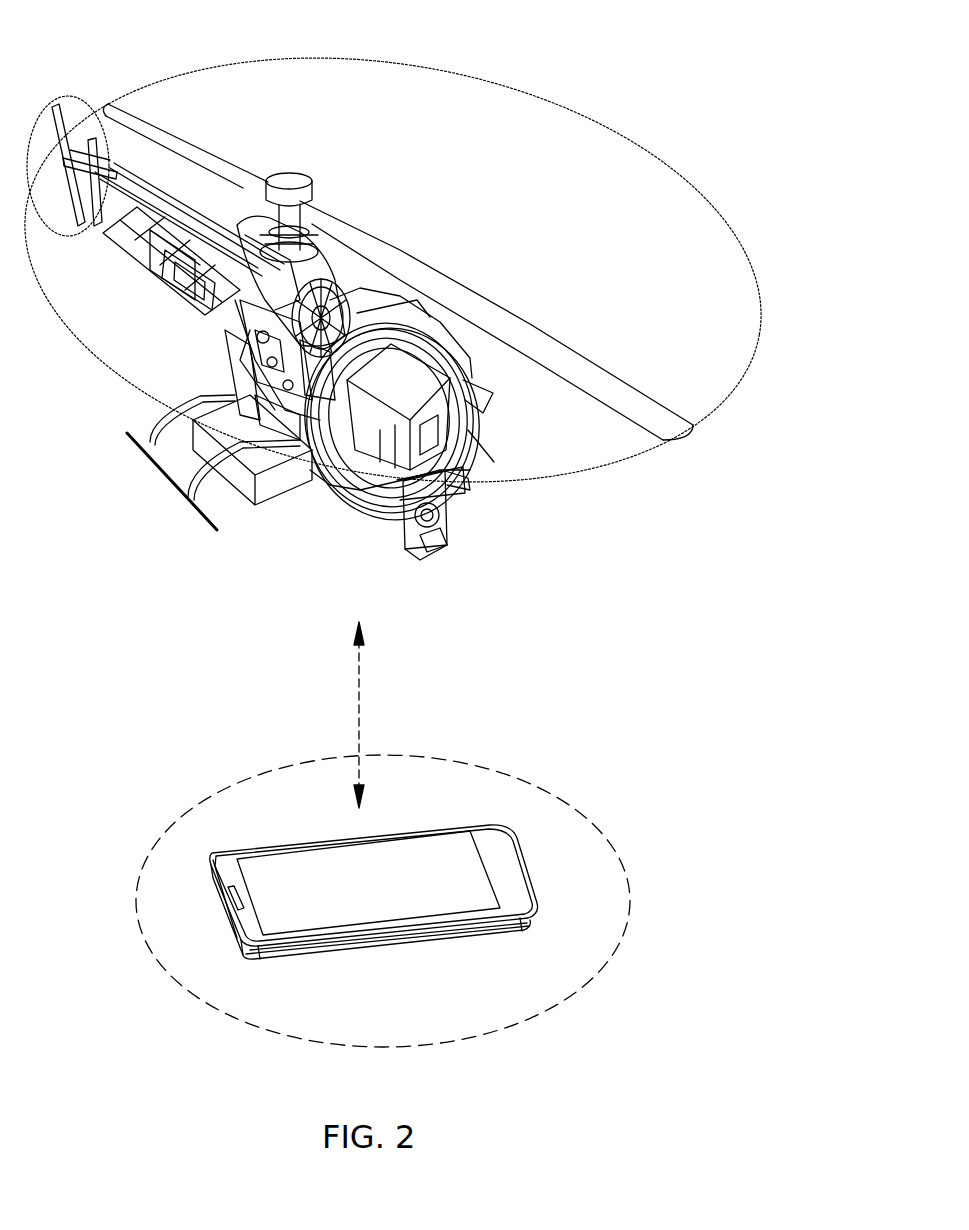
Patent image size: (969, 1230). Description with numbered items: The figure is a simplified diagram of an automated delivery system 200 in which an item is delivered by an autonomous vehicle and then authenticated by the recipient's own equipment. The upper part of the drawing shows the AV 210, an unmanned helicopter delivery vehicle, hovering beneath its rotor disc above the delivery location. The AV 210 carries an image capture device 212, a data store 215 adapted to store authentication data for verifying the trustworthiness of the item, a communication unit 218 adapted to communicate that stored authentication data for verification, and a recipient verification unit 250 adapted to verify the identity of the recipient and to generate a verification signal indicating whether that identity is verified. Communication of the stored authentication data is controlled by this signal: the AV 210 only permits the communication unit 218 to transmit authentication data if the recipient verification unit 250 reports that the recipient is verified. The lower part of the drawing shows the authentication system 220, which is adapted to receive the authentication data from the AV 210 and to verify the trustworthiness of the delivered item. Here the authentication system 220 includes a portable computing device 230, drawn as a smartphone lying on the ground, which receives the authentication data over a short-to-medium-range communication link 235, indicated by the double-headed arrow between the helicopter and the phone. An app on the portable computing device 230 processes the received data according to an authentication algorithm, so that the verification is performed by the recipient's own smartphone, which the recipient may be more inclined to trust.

The automated delivery system 200 is at (672, 112).
The AV 210 is at (360, 310).
The image capture device 212 is at (453, 535).
The data store 215 is at (260, 318).
The communication unit 218 is at (405, 418).
The authentication system 220 is at (545, 793).
The portable computing device 230 is at (450, 930).
The short-to-medium-range communication link 235 is at (359, 697).
The recipient verification unit 250 is at (458, 497).